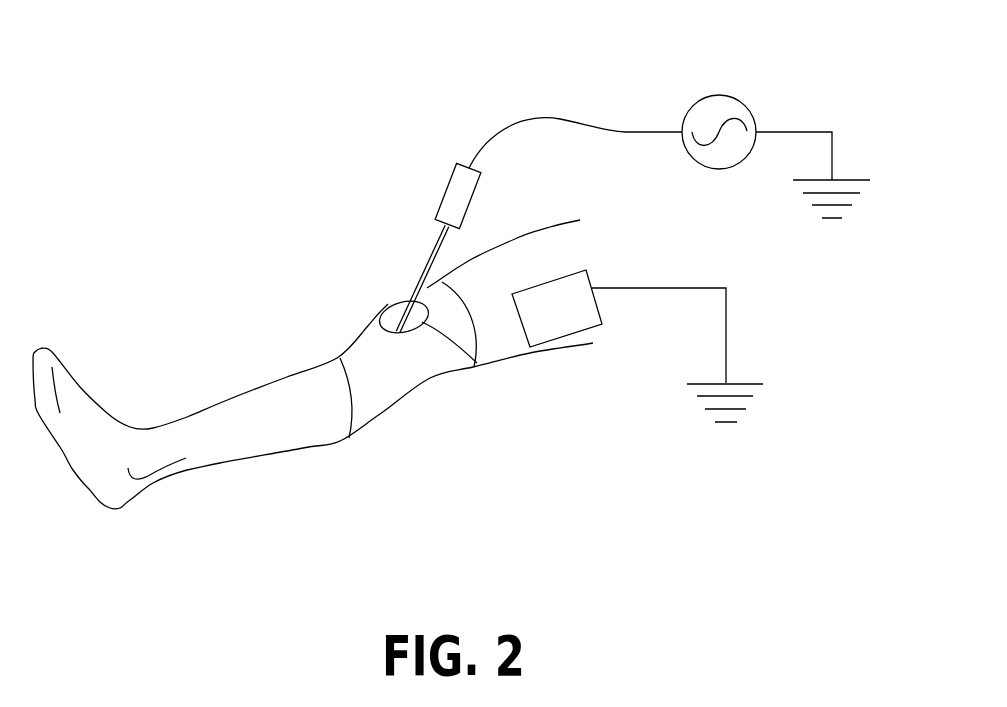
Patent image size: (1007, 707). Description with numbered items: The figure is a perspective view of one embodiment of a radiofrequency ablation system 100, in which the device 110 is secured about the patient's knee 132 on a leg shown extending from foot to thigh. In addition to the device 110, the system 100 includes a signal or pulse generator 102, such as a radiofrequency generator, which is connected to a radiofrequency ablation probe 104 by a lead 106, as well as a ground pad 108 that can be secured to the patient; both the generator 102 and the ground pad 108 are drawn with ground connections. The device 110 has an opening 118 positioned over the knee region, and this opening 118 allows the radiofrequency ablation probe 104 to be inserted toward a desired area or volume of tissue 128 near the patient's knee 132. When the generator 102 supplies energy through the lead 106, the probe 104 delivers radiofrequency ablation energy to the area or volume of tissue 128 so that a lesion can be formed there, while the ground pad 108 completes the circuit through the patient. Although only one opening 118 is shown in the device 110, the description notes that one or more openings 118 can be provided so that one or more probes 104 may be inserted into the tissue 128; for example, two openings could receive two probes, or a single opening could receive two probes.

The radiofrequency ablation system 100 is at (245, 119).
The signal or pulse generator 102 is at (720, 93).
The radiofrequency ablation probe 104 is at (447, 190).
The lead 106 is at (508, 125).
The ground pad 108 is at (567, 335).
The device 110 is at (380, 410).
The opening 118 is at (477, 363).
The area or volume of tissue 128 is at (392, 322).
The patient's knee 132 is at (381, 306).